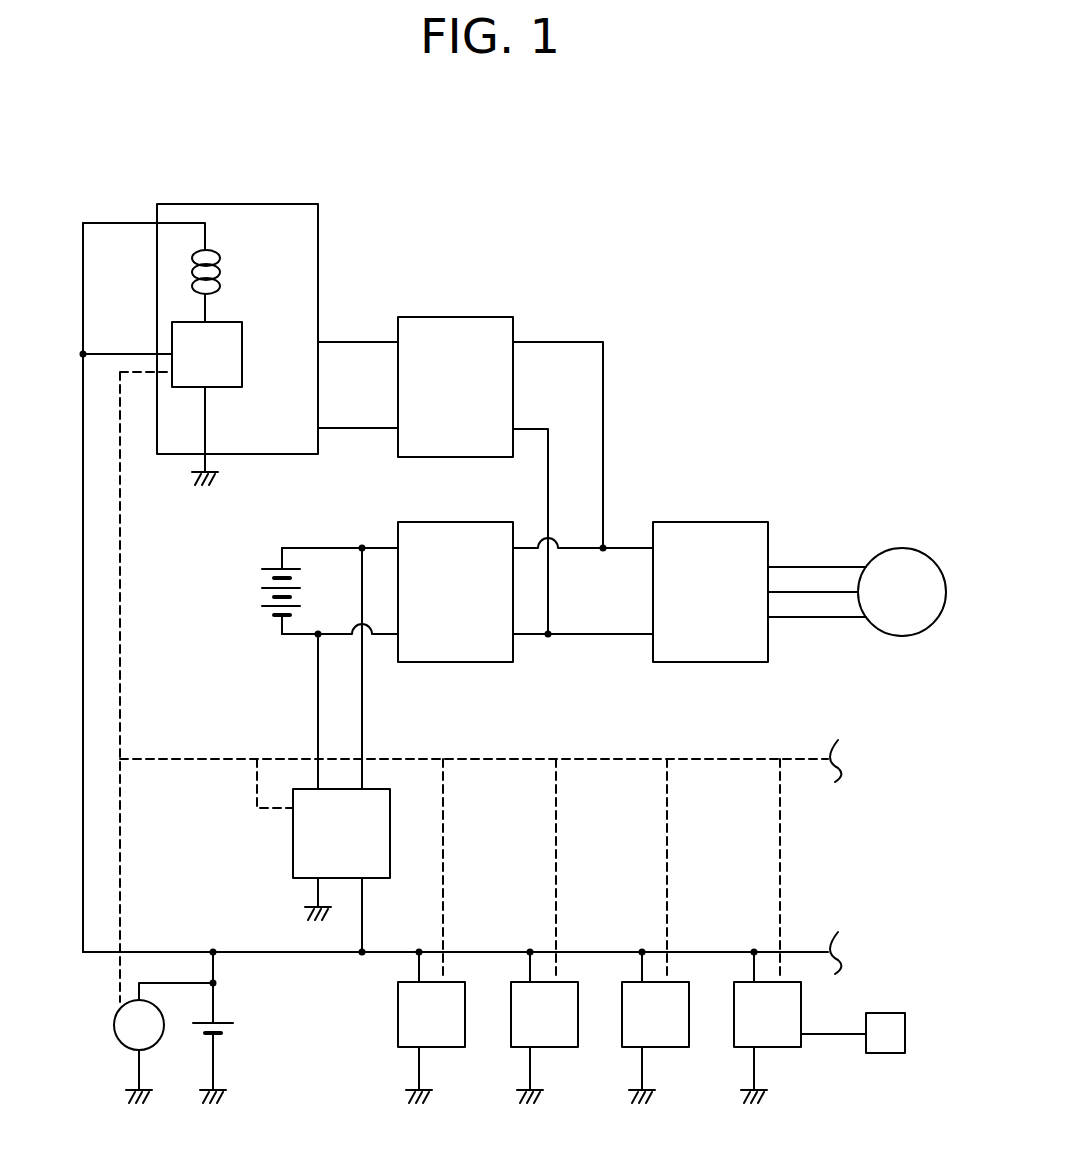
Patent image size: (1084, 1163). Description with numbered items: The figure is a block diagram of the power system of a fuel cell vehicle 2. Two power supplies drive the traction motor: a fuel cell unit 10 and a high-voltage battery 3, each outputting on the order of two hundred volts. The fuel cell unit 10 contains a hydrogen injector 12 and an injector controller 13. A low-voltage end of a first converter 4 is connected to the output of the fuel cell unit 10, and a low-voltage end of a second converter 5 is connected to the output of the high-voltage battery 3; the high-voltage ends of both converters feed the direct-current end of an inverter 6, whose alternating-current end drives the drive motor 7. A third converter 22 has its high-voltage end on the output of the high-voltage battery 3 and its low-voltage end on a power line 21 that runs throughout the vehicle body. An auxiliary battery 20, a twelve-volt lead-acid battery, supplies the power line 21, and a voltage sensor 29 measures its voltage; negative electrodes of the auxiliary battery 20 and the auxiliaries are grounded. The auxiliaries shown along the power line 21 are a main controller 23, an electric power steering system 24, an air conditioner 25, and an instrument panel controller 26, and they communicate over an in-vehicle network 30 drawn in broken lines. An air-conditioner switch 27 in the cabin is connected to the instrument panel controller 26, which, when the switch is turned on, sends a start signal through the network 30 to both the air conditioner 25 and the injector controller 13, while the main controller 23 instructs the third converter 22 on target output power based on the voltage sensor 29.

The fuel cell vehicle 2 is at (131, 130).
The high-voltage battery 3 is at (272, 567).
The first converter 4 is at (485, 317).
The second converter 5 is at (413, 522).
The inverter 6 is at (743, 522).
The drive motor 7 is at (902, 548).
The fuel cell unit 10 is at (298, 204).
The hydrogen injector 12 is at (220, 255).
The injector controller 13 is at (234, 322).
The auxiliary battery 20 is at (225, 1023).
The power line 21 is at (280, 952).
The third converter 22 is at (293, 852).
The main controller 23 is at (443, 1047).
The electric power steering system 24 is at (556, 1047).
The air conditioner 25 is at (667, 1047).
The instrument panel controller 26 is at (779, 1047).
The air-conditioner switch 27 is at (890, 1053).
The voltage sensor 29 is at (114, 1025).
The in-vehicle network 30 is at (217, 759).